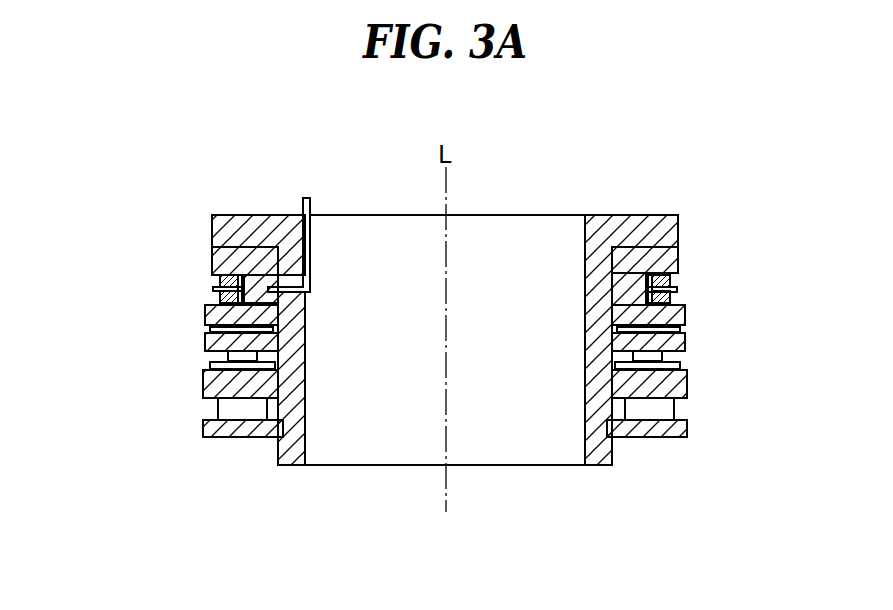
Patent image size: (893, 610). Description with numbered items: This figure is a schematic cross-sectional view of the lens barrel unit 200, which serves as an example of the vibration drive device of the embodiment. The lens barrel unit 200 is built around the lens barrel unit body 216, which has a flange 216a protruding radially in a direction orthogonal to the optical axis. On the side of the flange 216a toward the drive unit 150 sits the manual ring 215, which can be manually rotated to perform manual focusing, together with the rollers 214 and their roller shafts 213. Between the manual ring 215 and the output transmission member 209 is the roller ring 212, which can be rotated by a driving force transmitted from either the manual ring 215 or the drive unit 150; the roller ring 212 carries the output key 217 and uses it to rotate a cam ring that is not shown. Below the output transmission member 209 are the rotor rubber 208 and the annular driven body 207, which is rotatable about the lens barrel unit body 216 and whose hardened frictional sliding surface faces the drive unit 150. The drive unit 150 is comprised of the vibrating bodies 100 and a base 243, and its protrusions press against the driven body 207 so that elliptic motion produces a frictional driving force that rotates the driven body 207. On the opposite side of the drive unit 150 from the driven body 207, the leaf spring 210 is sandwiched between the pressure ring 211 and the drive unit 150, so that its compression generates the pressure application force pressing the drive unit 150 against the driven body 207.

The lens barrel unit 200 is at (470, 114).
The lens barrel unit body 216 is at (610, 226).
The flange 216a is at (218, 231).
The output key 217 is at (305, 210).
The output transmission member 209 is at (212, 303).
The rotor rubber 208 is at (205, 316).
The driven body 207 is at (205, 342).
The vibrating body 100 is at (203, 374).
The base 243 is at (208, 399).
The drive unit 150 is at (163, 403).
The manual ring 215 is at (668, 262).
The roller 214 is at (674, 282).
The roller shaft 213 is at (680, 290).
The roller ring 212 is at (687, 315).
The leaf spring 210 is at (662, 409).
The pressure ring 211 is at (680, 428).